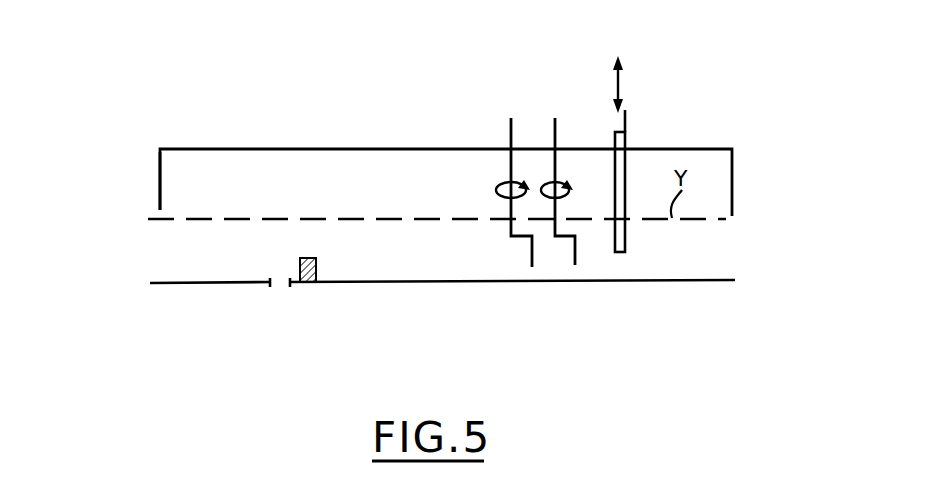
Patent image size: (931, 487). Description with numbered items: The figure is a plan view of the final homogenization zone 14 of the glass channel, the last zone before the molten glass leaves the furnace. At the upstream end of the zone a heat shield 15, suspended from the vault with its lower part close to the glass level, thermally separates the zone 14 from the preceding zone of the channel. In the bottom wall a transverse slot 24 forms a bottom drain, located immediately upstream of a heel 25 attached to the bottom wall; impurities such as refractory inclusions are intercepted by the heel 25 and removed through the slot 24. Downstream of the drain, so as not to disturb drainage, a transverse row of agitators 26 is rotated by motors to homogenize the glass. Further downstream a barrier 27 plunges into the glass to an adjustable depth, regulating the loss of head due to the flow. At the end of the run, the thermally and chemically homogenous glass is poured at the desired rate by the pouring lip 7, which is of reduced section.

The pouring lip 7 is at (745, 236).
The final homogenization zone 14 is at (439, 128).
The heat shield 15 is at (156, 185).
The transverse slot 24 is at (277, 291).
The heel 25 is at (314, 270).
The agitators 26 is at (509, 160).
The barrier 27 is at (630, 131).